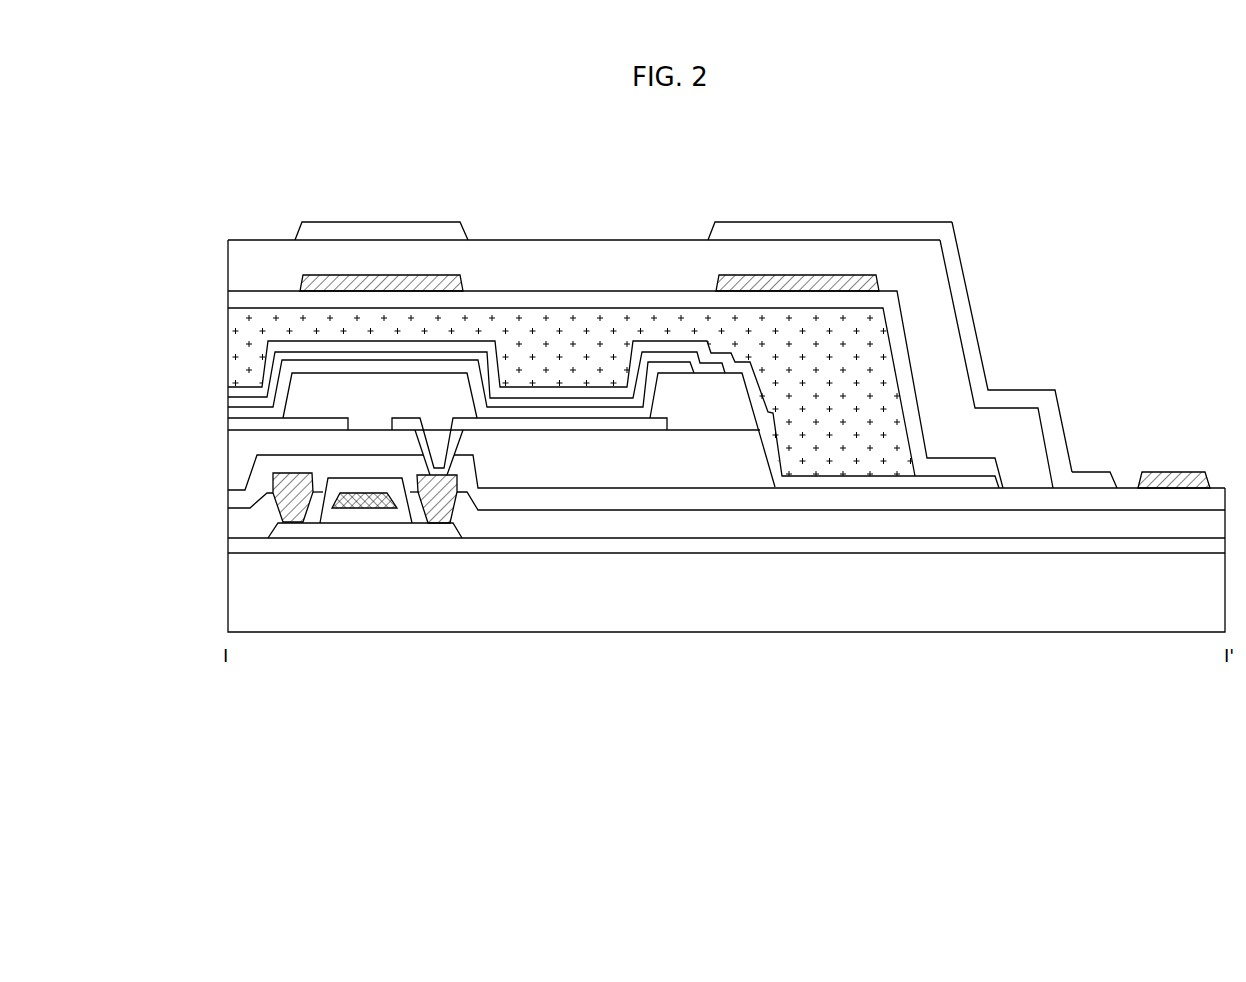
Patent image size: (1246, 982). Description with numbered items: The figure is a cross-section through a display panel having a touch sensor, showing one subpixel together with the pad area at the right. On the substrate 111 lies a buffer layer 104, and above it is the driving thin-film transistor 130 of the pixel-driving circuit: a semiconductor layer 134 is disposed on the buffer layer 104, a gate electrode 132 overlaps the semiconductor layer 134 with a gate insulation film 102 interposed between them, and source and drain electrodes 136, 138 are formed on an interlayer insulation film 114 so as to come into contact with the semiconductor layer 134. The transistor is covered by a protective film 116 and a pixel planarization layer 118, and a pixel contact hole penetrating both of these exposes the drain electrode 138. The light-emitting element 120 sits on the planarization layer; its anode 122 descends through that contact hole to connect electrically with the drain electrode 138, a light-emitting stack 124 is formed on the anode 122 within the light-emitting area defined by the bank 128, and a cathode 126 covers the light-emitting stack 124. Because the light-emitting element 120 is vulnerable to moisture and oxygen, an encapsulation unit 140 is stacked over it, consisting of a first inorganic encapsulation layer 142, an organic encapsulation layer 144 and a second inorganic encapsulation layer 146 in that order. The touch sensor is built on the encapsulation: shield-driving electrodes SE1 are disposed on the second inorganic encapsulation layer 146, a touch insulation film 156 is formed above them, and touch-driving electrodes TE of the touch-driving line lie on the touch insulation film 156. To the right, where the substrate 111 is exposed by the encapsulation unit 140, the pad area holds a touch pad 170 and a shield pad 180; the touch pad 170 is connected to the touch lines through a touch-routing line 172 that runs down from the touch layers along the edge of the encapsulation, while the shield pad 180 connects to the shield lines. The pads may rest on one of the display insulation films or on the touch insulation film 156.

The gate insulation film 102 is at (300, 527).
The buffer layer 104 is at (666, 548).
The substrate 111 is at (248, 572).
The interlayer insulation film 114 is at (248, 526).
The protective film 116 is at (248, 491).
The pixel planarization layer 118 is at (548, 470).
The light-emitting element 120 is at (410, 413).
The anode 122 is at (226, 425).
The light-emitting stack 124 is at (226, 412).
The cathode 126 is at (226, 402).
The bank 128 is at (713, 412).
The driving thin-film transistor 130 is at (365, 605).
The gate electrode 132 is at (362, 514).
The semiconductor layer 134 is at (388, 512).
The source electrode 136 is at (296, 527).
The drain electrode 138 is at (436, 527).
The encapsulation unit 140 is at (549, 389).
The first inorganic encapsulation layer 142 is at (226, 392).
The organic encapsulation layer 144 is at (228, 341).
The second inorganic encapsulation layer 146 is at (228, 301).
The touch insulation film 156 is at (248, 266).
The touch pad 170 is at (1092, 470).
The touch-routing line 172 is at (966, 275).
The shield pad 180 is at (1168, 470).
The shield-driving electrode SE1 is at (352, 277).
The touch-driving electrode TE is at (400, 232).